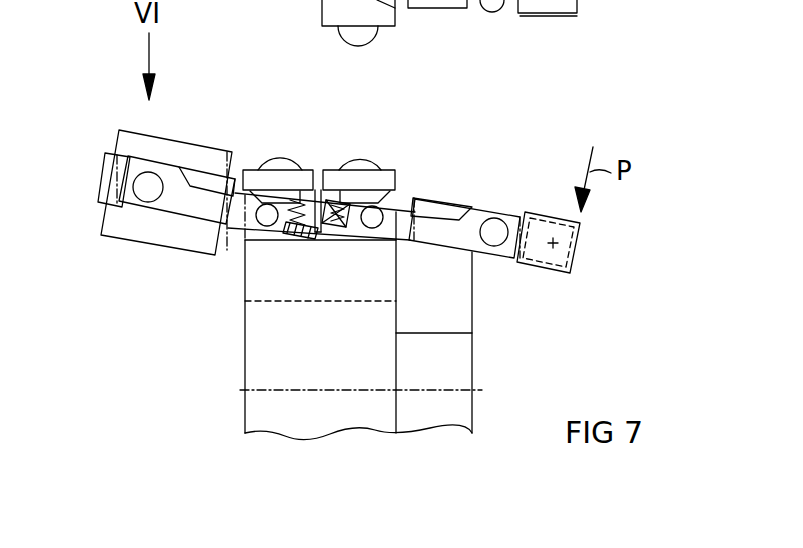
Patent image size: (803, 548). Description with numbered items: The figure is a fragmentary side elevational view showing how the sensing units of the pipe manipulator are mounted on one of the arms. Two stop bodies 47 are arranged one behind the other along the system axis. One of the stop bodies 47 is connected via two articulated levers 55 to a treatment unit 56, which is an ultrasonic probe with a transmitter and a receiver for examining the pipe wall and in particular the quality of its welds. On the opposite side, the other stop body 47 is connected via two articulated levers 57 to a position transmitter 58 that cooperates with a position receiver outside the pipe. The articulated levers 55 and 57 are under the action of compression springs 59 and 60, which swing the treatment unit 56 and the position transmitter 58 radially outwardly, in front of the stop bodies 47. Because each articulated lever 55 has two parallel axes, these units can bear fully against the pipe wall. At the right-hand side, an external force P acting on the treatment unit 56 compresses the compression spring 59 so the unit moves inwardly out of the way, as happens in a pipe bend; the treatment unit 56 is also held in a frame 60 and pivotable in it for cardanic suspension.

The stop body 47 is at (279, 152).
The articulated lever 55 is at (443, 228).
The treatment unit 56 is at (433, 202).
The articulated lever 57 is at (187, 207).
The position transmitter 58 is at (112, 222).
The compression spring 59 is at (336, 240).
The compression spring 60 is at (296, 248).